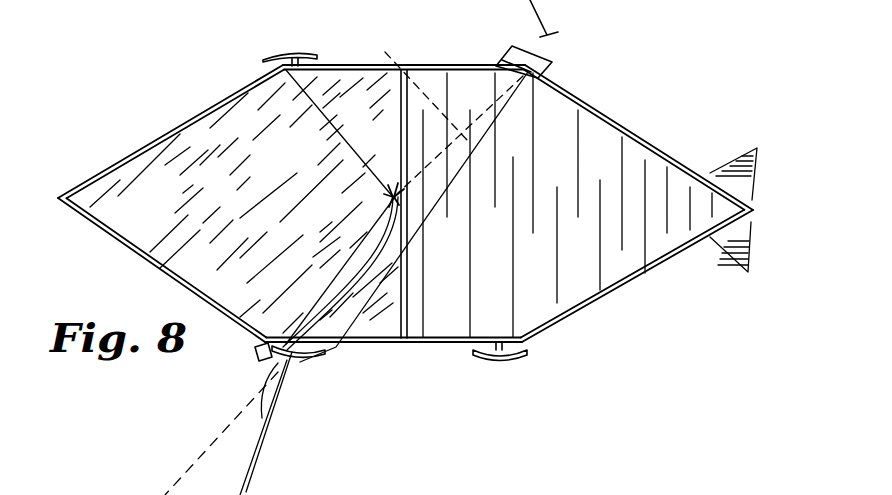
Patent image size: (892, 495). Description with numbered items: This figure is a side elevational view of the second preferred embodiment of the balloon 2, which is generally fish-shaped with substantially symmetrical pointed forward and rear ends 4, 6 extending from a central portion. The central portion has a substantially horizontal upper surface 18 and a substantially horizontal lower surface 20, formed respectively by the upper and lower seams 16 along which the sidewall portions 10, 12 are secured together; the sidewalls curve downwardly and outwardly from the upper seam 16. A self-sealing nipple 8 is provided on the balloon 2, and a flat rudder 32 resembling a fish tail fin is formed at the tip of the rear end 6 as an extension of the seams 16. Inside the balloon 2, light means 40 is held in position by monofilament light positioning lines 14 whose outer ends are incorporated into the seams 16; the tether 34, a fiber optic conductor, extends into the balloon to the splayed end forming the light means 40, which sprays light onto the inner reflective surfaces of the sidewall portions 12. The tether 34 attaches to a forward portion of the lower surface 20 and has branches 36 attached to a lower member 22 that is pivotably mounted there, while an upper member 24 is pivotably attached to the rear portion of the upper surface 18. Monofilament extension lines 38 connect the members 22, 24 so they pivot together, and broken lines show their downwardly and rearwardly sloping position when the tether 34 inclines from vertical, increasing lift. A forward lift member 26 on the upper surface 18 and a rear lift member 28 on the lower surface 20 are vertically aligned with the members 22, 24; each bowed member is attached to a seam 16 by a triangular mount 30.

The balloon 2 is at (179, 119).
The forward tapered end 4 is at (100, 240).
The rear tapered end 6 is at (642, 283).
The self-sealing nipple 8 is at (265, 354).
The sidewall portion 10 is at (272, 177).
The sidewall portion 12 is at (568, 178).
The light positioning lines 14 is at (342, 100).
The seams 16 is at (575, 97).
The upper surface 18 is at (435, 65).
The lower surface 20 is at (423, 343).
The lower member 22 is at (277, 378).
The upper member 24 is at (548, 57).
The forward lift member 26 is at (295, 54).
The rear lift member 28 is at (510, 360).
The triangular mount 30 is at (282, 66).
The rudder 32 is at (713, 172).
The tether 34 is at (541, 18).
The branches 36 is at (303, 378).
The extension lines 38 is at (353, 243).
The light means 40 is at (392, 192).